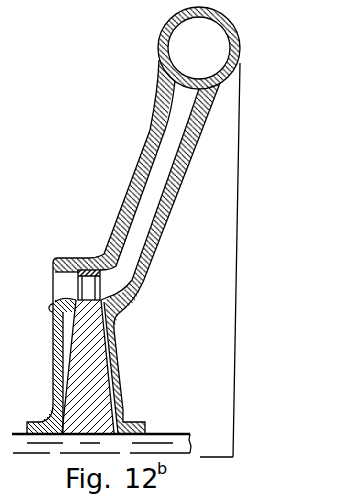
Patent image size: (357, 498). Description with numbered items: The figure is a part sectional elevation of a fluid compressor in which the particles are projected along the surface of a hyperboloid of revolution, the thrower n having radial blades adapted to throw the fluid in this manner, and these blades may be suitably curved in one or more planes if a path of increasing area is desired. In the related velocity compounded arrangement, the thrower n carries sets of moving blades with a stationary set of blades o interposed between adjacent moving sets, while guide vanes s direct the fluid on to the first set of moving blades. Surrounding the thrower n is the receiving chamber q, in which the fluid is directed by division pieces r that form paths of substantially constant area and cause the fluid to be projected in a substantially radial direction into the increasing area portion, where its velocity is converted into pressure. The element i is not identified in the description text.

The eye of connecting rod i is at (232, 42).
The division pieces r is at (158, 188).
The guide vanes s is at (60, 283).
The stationary set of blades o is at (90, 275).
The receiving chamber q is at (112, 284).
The thrower n is at (97, 372).